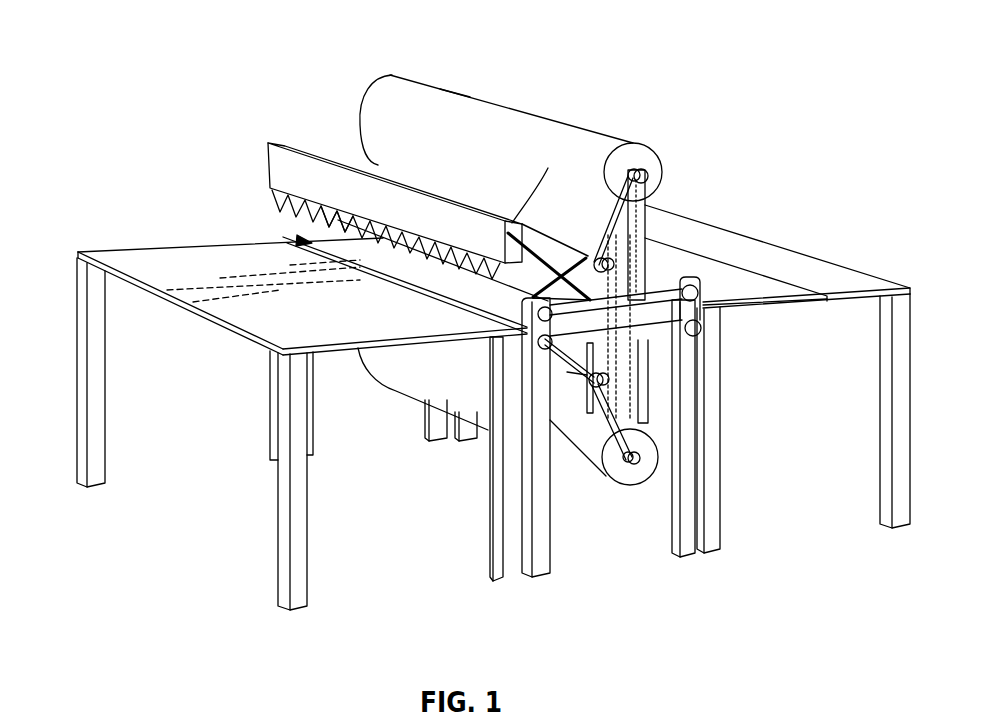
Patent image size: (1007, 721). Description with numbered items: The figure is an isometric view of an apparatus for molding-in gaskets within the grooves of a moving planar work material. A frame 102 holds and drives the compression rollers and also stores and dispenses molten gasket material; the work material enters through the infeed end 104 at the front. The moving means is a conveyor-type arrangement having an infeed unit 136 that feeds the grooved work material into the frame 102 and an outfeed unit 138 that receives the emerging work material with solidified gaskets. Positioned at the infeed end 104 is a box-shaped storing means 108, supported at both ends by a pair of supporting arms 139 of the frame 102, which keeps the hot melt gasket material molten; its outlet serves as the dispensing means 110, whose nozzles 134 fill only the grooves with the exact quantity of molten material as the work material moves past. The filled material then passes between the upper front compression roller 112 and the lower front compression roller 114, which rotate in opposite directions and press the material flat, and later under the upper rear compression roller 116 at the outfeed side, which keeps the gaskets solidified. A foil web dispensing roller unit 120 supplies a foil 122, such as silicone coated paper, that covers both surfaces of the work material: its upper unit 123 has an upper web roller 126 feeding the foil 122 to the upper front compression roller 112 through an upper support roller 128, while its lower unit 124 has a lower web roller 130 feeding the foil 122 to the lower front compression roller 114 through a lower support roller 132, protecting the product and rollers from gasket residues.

The frame 102 is at (645, 223).
The infeed end 104 is at (300, 240).
The storing means 108 is at (277, 150).
The dispensing means 110 is at (273, 188).
The upper front compression roller 112 is at (337, 197).
The lower front compression roller 114 is at (515, 350).
The upper rear compression roller 116 is at (648, 277).
The foil web dispensing roller unit 120 is at (403, 100).
The foil 122 is at (783, 295).
The upper unit 123 is at (453, 113).
The lower unit 124 is at (580, 445).
The upper web roller 126 is at (513, 127).
The upper support roller 128 is at (640, 228).
The lower web roller 130 is at (573, 427).
The lower support roller 132 is at (596, 378).
The nozzles 134 is at (540, 283).
The infeed unit 136 is at (147, 260).
The outfeed unit 138 is at (850, 282).
The supporting arms 139 is at (573, 250).